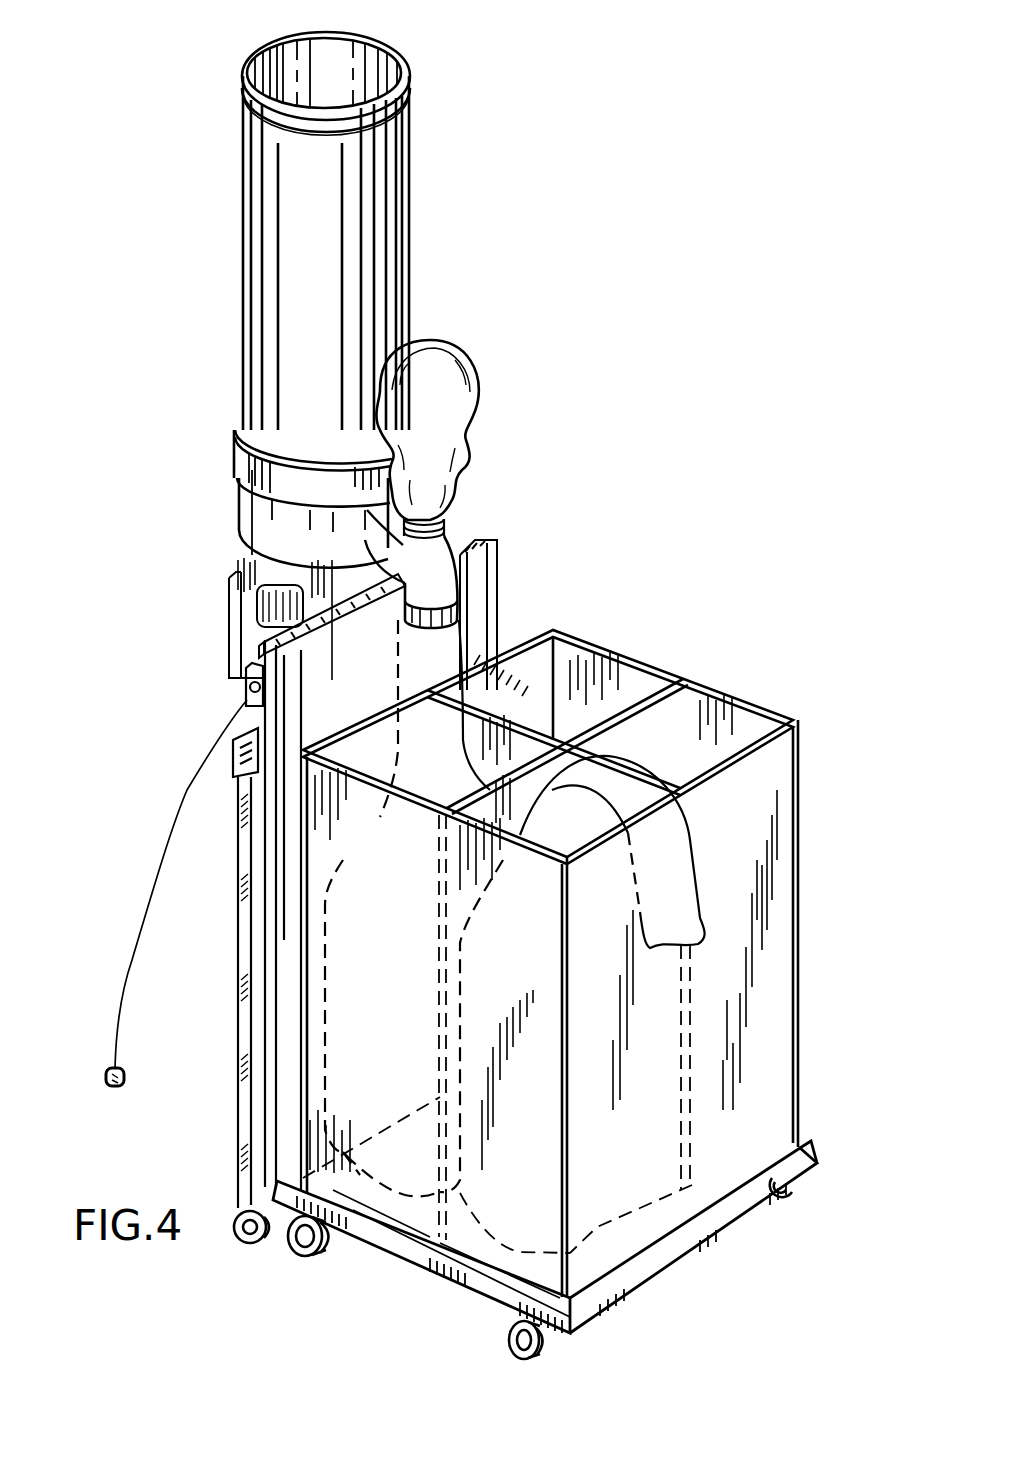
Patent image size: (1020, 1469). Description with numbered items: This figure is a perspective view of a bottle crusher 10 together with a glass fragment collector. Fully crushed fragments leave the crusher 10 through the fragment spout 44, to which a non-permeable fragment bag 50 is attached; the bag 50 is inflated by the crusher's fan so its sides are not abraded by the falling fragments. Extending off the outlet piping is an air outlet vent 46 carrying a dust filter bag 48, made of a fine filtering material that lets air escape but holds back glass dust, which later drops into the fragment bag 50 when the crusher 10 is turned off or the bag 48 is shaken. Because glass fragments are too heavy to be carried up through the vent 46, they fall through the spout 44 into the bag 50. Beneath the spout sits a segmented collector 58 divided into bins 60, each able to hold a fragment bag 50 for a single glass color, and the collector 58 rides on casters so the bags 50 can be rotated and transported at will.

The crusher 10 is at (412, 296).
The fragment spout 44 is at (447, 545).
The air outlet vent 46 is at (432, 527).
The dust filter bag 48 is at (442, 412).
The fragment bag 50 is at (420, 703).
The segmented collector 58 is at (778, 968).
The bin 60 is at (652, 668).